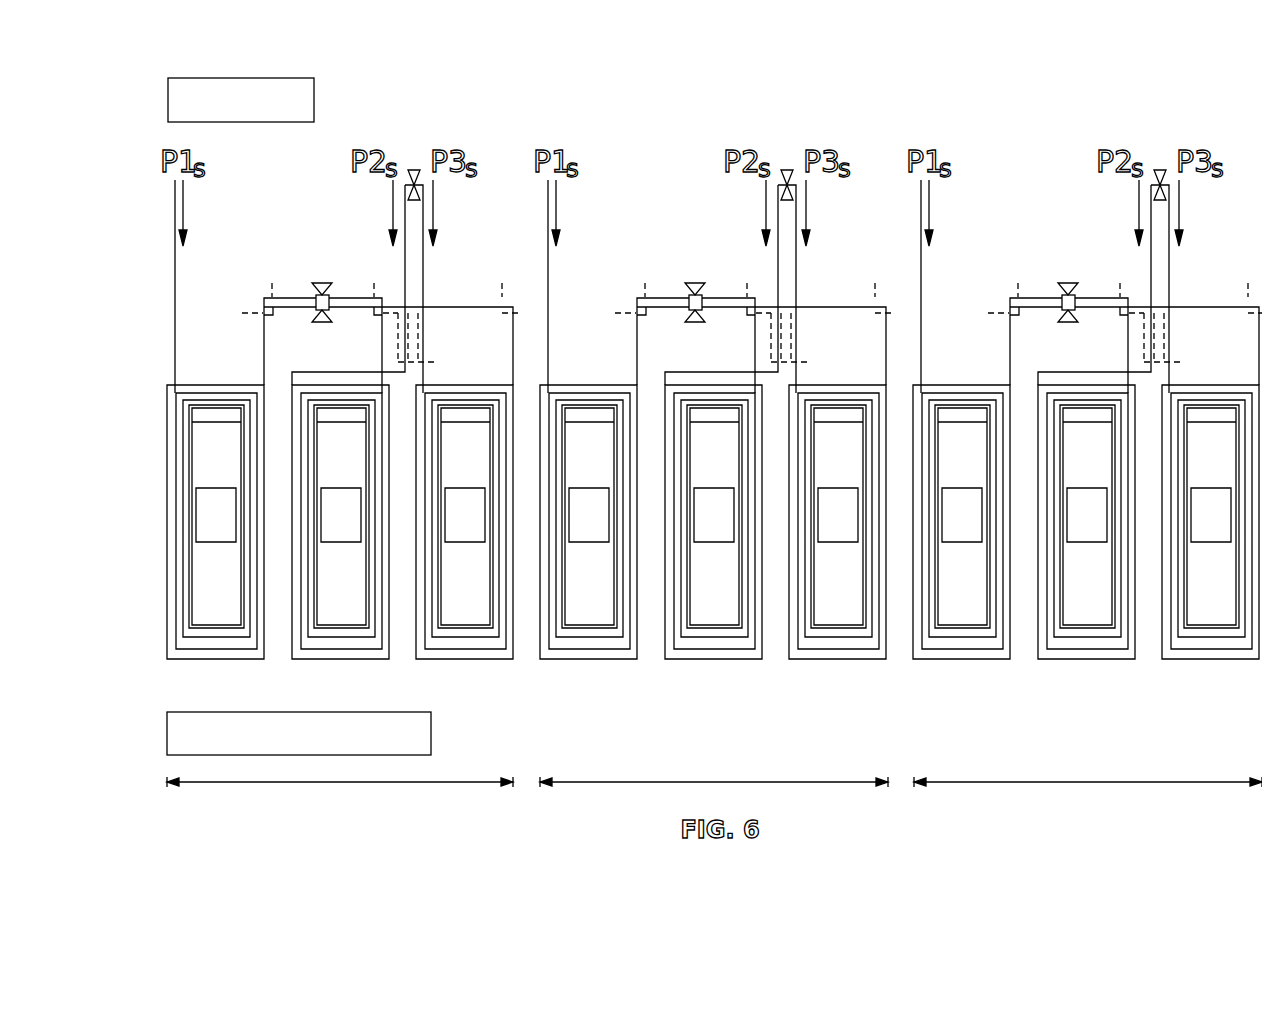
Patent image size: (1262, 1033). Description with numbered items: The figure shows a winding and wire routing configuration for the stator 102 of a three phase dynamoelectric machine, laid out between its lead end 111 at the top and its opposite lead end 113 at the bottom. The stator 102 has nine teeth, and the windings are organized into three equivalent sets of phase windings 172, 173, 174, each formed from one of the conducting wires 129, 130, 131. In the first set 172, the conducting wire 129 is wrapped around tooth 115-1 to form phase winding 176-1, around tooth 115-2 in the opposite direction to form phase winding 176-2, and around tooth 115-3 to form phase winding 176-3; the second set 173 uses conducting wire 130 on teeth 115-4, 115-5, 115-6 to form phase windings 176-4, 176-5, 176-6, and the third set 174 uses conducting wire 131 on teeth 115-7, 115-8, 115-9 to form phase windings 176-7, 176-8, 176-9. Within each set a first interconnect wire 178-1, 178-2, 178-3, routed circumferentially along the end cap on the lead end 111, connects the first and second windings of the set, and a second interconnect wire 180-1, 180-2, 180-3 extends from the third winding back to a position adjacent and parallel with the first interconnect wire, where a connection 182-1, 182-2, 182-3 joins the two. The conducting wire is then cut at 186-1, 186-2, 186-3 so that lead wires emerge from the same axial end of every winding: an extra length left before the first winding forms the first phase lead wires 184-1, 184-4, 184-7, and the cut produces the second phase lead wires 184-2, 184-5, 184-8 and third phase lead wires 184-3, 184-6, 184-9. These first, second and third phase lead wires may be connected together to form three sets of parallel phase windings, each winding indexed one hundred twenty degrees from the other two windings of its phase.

The stator 102 is at (1175, 59).
The lead end 111 is at (262, 78).
The opposite lead end 113 is at (373, 712).
The conducting wire 129 is at (177, 272).
The conducting wire 130 is at (550, 272).
The conducting wire 131 is at (923, 272).
The set of phase windings 172 is at (288, 783).
The set of phase windings 173 is at (661, 783).
The set of phase windings 174 is at (1033, 783).
The tooth 115-1 is at (211, 530).
The phase winding 176-1 is at (185, 383).
The lead wire 184-1 is at (175, 238).
The tooth 115-2 is at (336, 530).
The phase winding 176-2 is at (297, 372).
The lead wire 184-2 is at (405, 277).
The tooth 115-3 is at (460, 530).
The phase winding 176-3 is at (433, 383).
The lead wire 184-3 is at (425, 277).
The tooth 115-4 is at (584, 530).
The phase winding 176-4 is at (558, 383).
The lead wire 184-4 is at (548, 238).
The tooth 115-5 is at (709, 530).
The phase winding 176-5 is at (670, 372).
The lead wire 184-5 is at (778, 277).
The tooth 115-6 is at (833, 530).
The phase winding 176-6 is at (806, 383).
The lead wire 184-6 is at (798, 277).
The tooth 115-7 is at (957, 530).
The phase winding 176-7 is at (931, 383).
The lead wire 184-7 is at (921, 238).
The tooth 115-8 is at (1082, 530).
The phase winding 176-8 is at (1043, 372).
The lead wire 184-8 is at (1151, 277).
The tooth 115-9 is at (1206, 530).
The phase winding 176-9 is at (1179, 383).
The lead wire 184-9 is at (1171, 277).
The first interconnect wire 178-1 is at (288, 297).
The second interconnect wire 180-1 is at (470, 307).
The connection 182-1 is at (322, 283).
The cut 186-1 is at (414, 170).
The first interconnect wire 178-2 is at (661, 297).
The second interconnect wire 180-2 is at (843, 307).
The connection 182-2 is at (695, 283).
The cut 186-2 is at (787, 170).
The first interconnect wire 178-3 is at (1034, 297).
The second interconnect wire 180-3 is at (1216, 307).
The connection 182-3 is at (1068, 283).
The cut 186-3 is at (1160, 170).